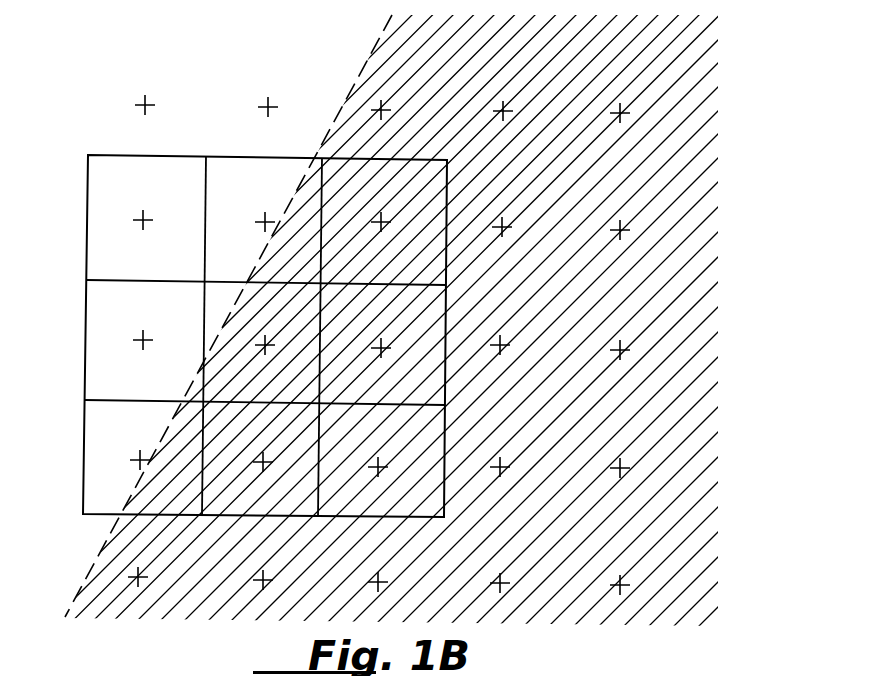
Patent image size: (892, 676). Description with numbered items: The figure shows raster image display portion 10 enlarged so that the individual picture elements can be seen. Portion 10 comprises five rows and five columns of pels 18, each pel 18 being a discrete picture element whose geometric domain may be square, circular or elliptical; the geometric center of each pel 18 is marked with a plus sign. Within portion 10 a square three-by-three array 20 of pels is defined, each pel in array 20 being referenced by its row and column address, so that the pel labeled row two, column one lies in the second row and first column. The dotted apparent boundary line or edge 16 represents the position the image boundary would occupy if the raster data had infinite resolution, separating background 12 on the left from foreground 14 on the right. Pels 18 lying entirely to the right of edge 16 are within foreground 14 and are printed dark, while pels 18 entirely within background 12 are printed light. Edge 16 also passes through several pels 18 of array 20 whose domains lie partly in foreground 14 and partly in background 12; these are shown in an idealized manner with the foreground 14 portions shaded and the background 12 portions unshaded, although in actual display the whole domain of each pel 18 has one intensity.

The raster image display portion 10 is at (118, 83).
The background 12 is at (257, 52).
The foreground 14 is at (537, 62).
The apparent boundary line or edge 16 is at (371, 56).
The pels 18 is at (148, 100).
The 3×3 array 20 is at (113, 152).